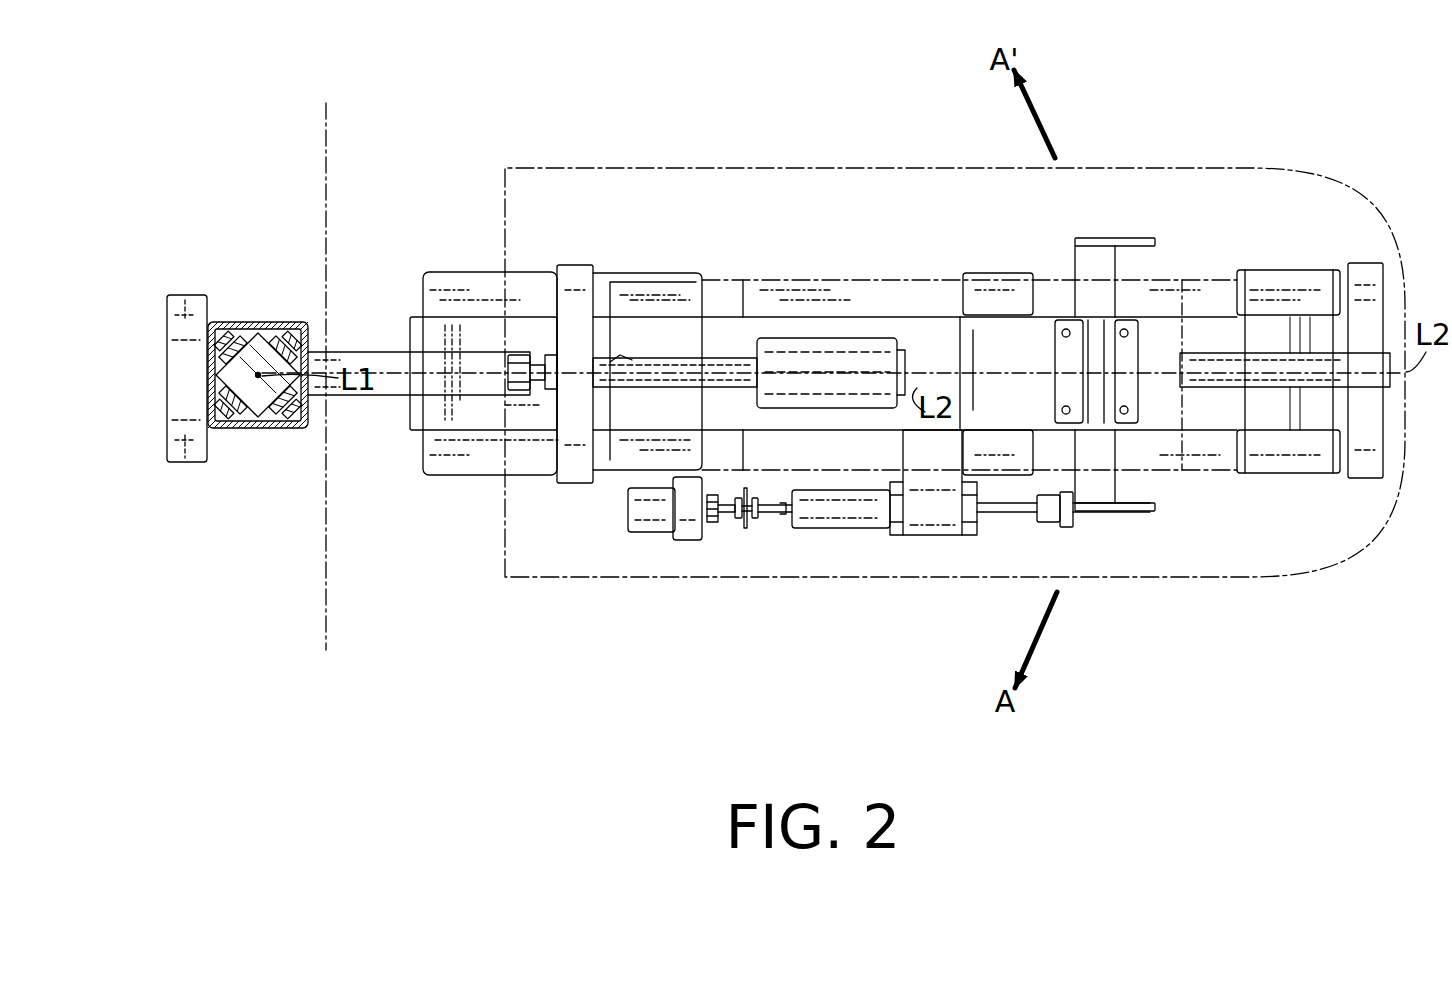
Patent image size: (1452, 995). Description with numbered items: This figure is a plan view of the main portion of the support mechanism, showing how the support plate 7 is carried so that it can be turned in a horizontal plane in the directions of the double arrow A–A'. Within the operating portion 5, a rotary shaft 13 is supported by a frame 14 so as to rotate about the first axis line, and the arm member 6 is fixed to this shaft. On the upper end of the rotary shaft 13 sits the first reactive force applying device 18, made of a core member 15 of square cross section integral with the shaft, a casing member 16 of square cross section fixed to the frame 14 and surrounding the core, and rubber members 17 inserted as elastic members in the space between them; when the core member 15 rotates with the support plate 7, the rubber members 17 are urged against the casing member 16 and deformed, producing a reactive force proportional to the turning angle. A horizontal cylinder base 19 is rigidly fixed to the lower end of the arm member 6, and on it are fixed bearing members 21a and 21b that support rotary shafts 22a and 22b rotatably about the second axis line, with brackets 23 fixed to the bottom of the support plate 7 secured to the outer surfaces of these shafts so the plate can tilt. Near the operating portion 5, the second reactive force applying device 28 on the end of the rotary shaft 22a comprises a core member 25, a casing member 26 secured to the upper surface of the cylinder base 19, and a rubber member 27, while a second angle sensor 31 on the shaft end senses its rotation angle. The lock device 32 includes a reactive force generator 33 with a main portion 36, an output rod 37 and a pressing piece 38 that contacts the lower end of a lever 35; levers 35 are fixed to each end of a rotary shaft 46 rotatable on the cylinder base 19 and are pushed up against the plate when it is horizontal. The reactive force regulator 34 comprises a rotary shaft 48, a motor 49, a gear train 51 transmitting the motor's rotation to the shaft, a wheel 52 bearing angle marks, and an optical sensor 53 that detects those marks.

The operating portion 5 is at (330, 150).
The arm member 6 is at (390, 352).
The support plate 7 is at (1204, 170).
The rotary shaft 13 is at (205, 368).
The frame 14 is at (206, 296).
The core member 15 is at (256, 386).
The casing member 16 is at (298, 322).
The rubber member 17 is at (268, 332).
The first reactive force applying device 18 is at (231, 450).
The cylinder base 19 is at (928, 332).
The bearing member 21a is at (577, 476).
The bearing member 21b is at (1370, 272).
The rotary shaft 22a is at (646, 382).
The rotary shaft 22b is at (1246, 388).
The bracket 23 is at (730, 334).
The core member 25 is at (805, 352).
The casing member 26 is at (878, 340).
The rubber member 27 is at (848, 345).
The second reactive force applying device 28 is at (777, 233).
The second angle sensor 31 is at (514, 355).
The lock device 32 is at (1078, 538).
The reactive force generator 33 is at (848, 622).
The reactive force regulator 34 is at (632, 622).
The lever 35 is at (1148, 238).
The main portion 36 is at (858, 520).
The output rod 37 is at (990, 516).
The pressing piece 38 is at (1042, 522).
The rotary shaft 46 is at (1090, 352).
The rotary shaft 48 is at (783, 516).
The motor 49 is at (667, 528).
The gear train 51 is at (713, 524).
The wheel 52 is at (750, 520).
The optical sensor 53 is at (742, 488).